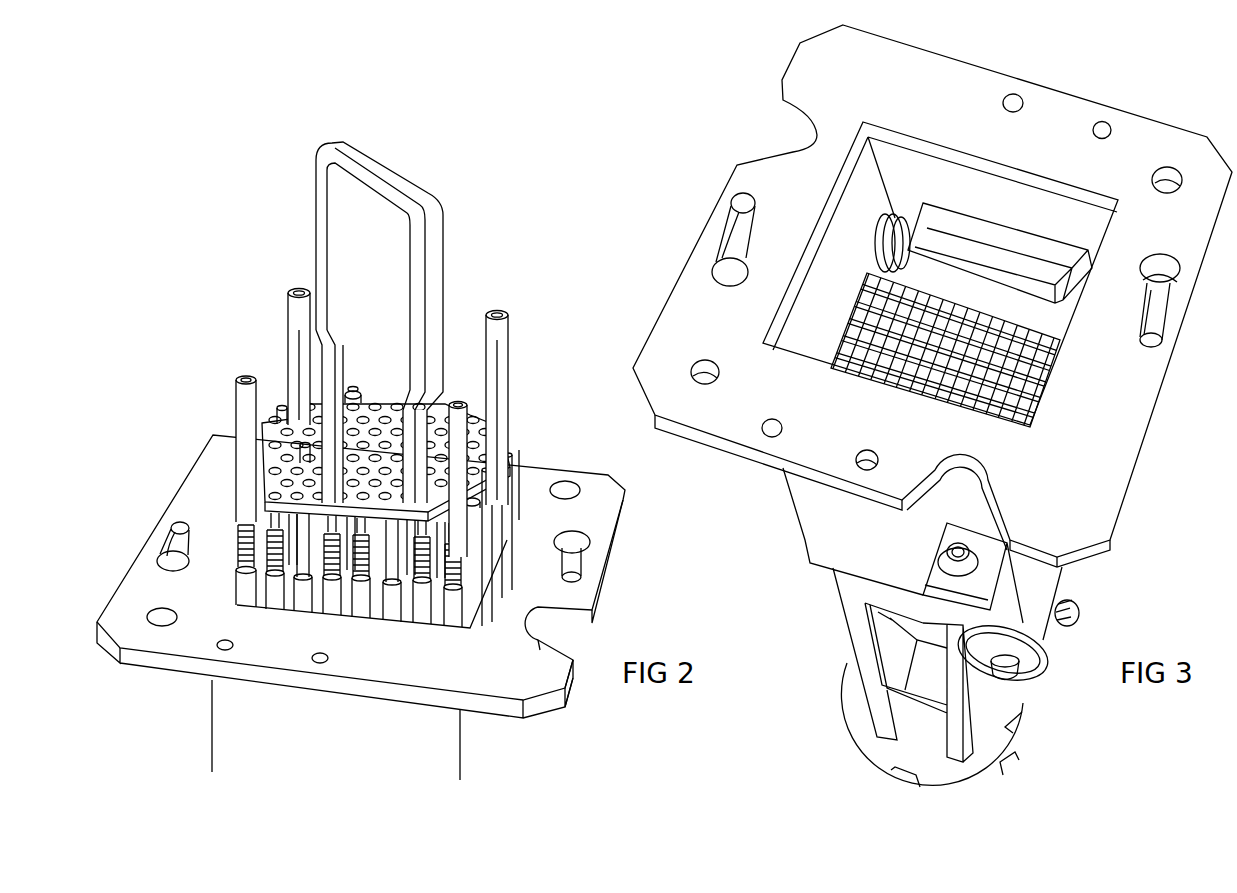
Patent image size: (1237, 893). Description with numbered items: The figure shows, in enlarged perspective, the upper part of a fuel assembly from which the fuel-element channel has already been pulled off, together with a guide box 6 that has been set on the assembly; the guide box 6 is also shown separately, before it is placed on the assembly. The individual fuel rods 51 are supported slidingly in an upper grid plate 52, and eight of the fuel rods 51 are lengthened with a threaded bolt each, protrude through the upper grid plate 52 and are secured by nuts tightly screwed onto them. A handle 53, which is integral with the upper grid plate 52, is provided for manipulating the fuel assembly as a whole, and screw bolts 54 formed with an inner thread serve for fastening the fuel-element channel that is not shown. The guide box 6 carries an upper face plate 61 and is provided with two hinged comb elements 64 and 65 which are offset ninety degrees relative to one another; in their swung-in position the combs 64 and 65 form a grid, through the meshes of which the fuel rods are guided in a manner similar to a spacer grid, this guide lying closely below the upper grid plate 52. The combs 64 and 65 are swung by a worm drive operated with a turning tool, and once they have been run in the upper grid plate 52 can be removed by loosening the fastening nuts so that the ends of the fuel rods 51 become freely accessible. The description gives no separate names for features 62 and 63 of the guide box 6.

In FIG. 2, the guide box 6 is at (437, 750).
In FIG. 3, the guide box 6 is at (1128, 428).
In FIG. 2, the fuel rods 51 is at (302, 587).
In FIG. 2, the upper grid plate 52 is at (500, 453).
In FIG. 2, the handle 53 is at (433, 236).
In FIG. 2, the screw bolts 54 is at (502, 335).
In FIG. 2, the upper face plate 61 is at (547, 670).
In FIG. 3, the elongated slots 62 is at (735, 238).
In FIG. 3, the holes 63 is at (1021, 97).
In FIG. 3, the hinged comb element 64 is at (987, 287).
In FIG. 3, the hinged comb element 65 is at (1077, 612).